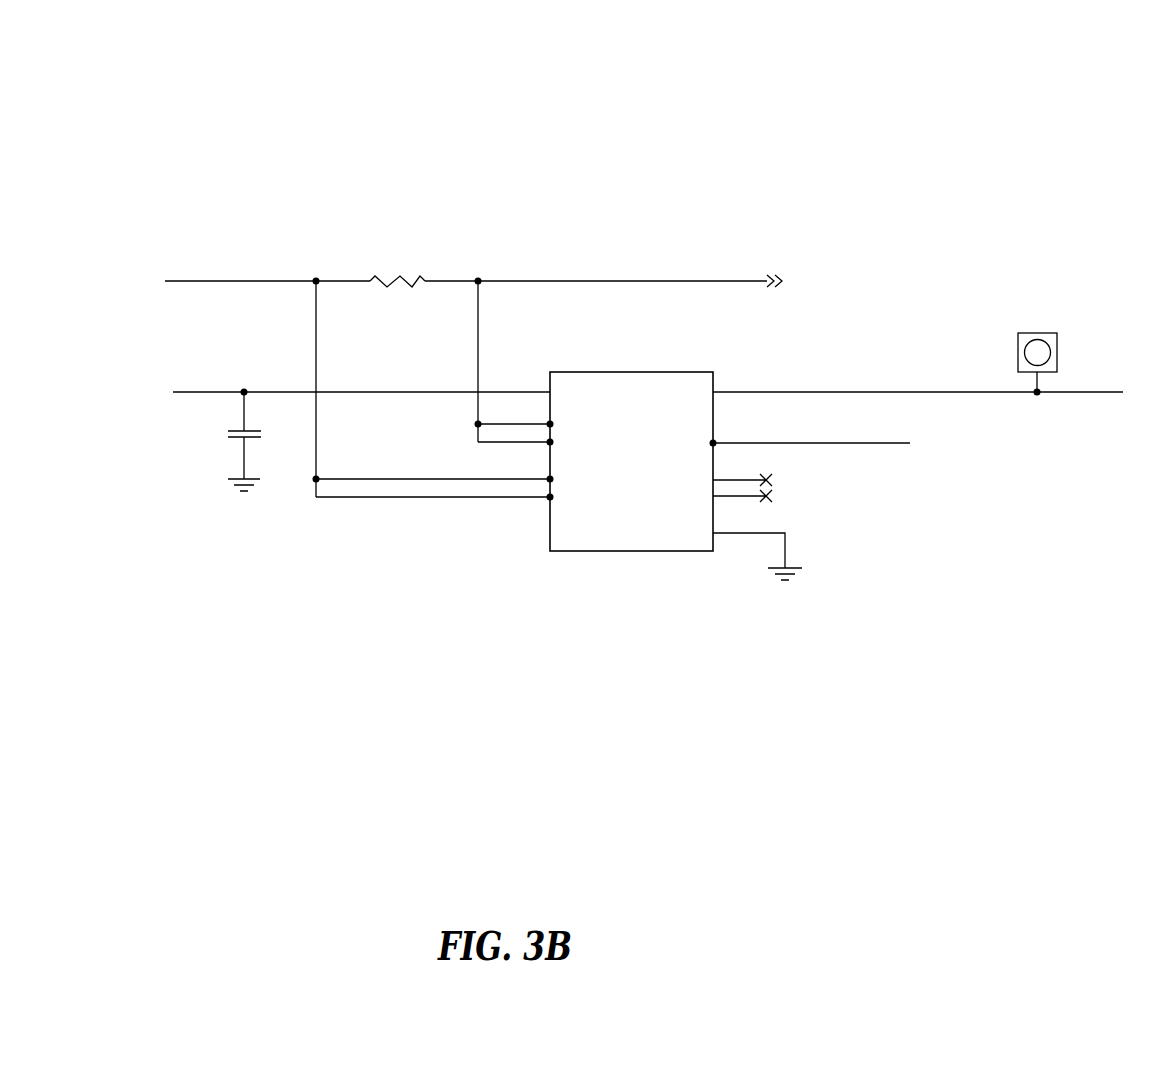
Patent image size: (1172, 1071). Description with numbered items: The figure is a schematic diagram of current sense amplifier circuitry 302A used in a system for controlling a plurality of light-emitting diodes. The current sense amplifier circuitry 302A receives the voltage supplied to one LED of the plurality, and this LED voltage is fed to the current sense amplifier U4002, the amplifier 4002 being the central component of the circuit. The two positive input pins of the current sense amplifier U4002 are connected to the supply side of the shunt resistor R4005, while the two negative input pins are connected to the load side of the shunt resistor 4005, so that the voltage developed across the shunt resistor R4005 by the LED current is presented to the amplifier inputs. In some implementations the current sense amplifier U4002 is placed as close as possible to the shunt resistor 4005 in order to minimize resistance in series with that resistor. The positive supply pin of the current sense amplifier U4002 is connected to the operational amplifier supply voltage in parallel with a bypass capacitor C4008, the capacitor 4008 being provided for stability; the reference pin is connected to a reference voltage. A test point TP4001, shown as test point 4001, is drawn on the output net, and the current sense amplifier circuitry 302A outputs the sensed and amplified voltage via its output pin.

The current sense amplifier circuitry 302A is at (1068, 114).
The shunt resistor R4005 is at (380, 282).
The sense resistor 4005 is at (380, 282).
The decoupling capacitor C4008 is at (264, 441).
The decoupling capacitor 4008 is at (264, 441).
The current sense amplifier U4002 is at (634, 463).
The current sense amplifier 4002 is at (634, 463).
The test point TP4001 is at (1038, 344).
The test point 4001 is at (1038, 344).